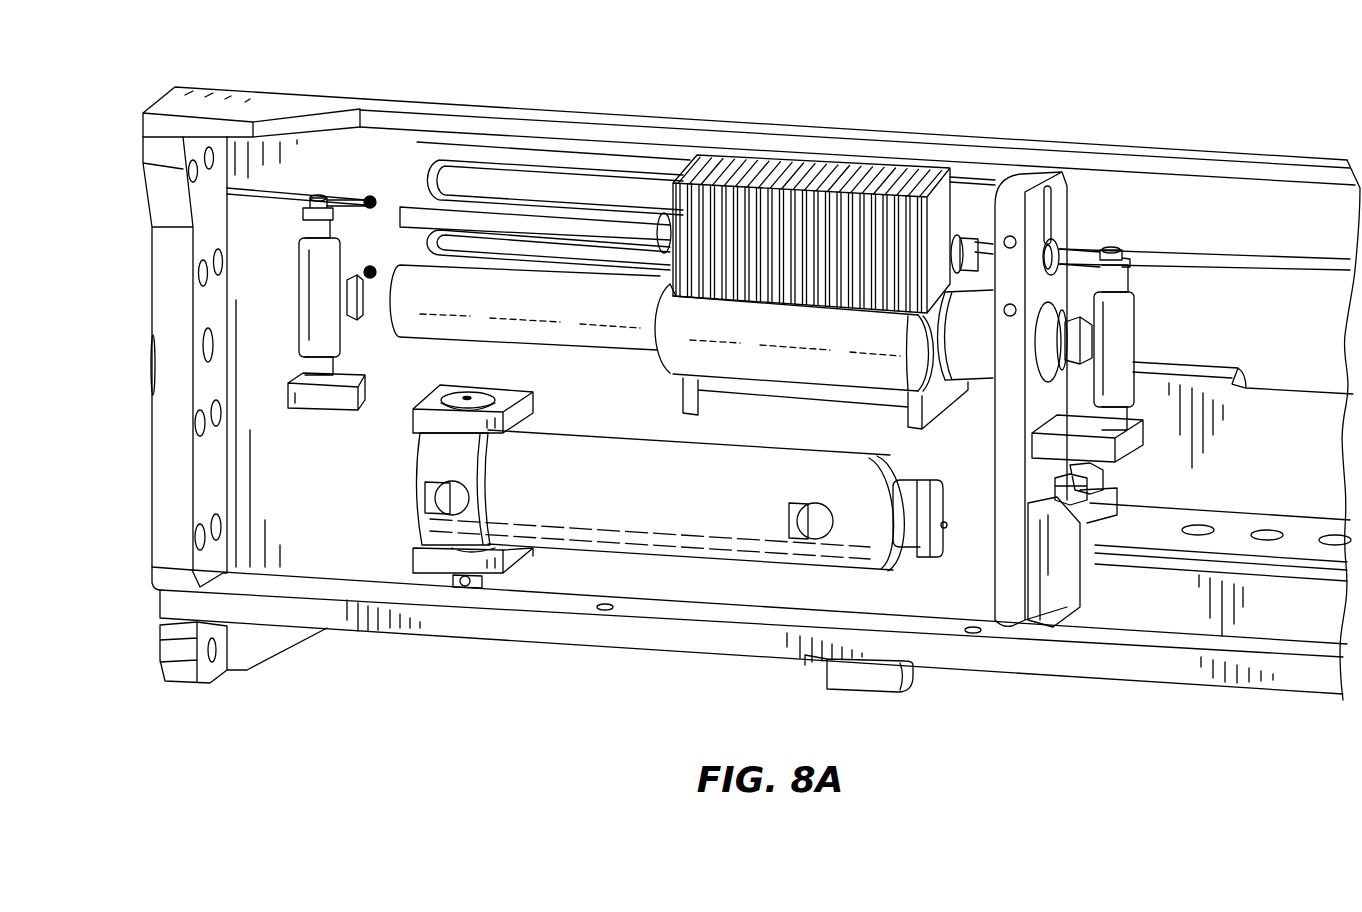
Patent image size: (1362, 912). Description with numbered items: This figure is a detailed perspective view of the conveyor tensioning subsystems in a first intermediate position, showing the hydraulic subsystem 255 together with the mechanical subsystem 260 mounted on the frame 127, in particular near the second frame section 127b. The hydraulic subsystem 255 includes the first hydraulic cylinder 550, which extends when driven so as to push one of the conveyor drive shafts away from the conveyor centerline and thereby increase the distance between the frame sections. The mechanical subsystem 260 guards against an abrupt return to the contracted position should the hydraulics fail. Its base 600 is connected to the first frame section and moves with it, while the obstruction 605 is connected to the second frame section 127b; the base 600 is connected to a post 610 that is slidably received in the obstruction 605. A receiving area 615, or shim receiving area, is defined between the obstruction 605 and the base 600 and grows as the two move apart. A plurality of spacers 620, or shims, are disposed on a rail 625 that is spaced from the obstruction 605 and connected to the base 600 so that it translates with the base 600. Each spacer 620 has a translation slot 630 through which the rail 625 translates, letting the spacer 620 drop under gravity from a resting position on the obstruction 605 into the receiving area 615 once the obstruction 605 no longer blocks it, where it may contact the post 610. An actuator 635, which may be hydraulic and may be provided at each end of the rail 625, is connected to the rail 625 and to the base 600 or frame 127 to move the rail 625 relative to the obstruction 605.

The frame 127 is at (751, 365).
The second frame section 127b is at (244, 104).
The hydraulic subsystem 255 is at (664, 573).
The mechanical subsystem 260 is at (799, 122).
The first hydraulic cylinder 550 is at (573, 537).
The base 600 is at (1014, 180).
The obstruction 605 is at (793, 353).
The post 610 is at (477, 312).
The receiving area 615 is at (930, 485).
The spacer 620 is at (890, 182).
The rail 625 is at (500, 226).
The translation slot 630 is at (931, 370).
The actuator 635 is at (308, 306).